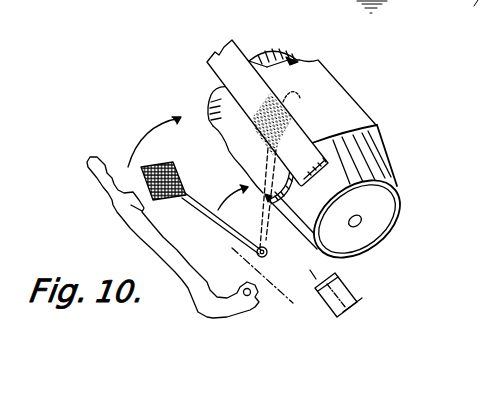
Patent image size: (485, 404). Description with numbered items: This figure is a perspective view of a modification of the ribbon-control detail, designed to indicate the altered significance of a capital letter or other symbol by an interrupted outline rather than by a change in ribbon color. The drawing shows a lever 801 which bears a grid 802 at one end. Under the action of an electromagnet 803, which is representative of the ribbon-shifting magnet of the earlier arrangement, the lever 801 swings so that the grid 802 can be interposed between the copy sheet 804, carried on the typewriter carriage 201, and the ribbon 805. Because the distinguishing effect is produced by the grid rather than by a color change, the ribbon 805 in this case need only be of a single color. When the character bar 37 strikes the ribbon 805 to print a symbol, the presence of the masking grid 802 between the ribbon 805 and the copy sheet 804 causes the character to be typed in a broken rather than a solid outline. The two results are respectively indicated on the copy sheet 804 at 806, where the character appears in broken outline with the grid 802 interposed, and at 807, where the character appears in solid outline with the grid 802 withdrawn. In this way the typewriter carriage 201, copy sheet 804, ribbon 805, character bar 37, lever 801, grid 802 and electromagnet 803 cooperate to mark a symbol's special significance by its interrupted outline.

The character bar 37 is at (151, 239).
The typewriter carriage 201 is at (375, 164).
The lever 801 is at (233, 231).
The grid 802 is at (180, 171).
The electromagnet 803 is at (344, 288).
The copy sheet 804 is at (312, 78).
The ribbon 805 is at (236, 44).
The broken outline character 806 is at (301, 99).
The solid outline character 807 is at (291, 60).